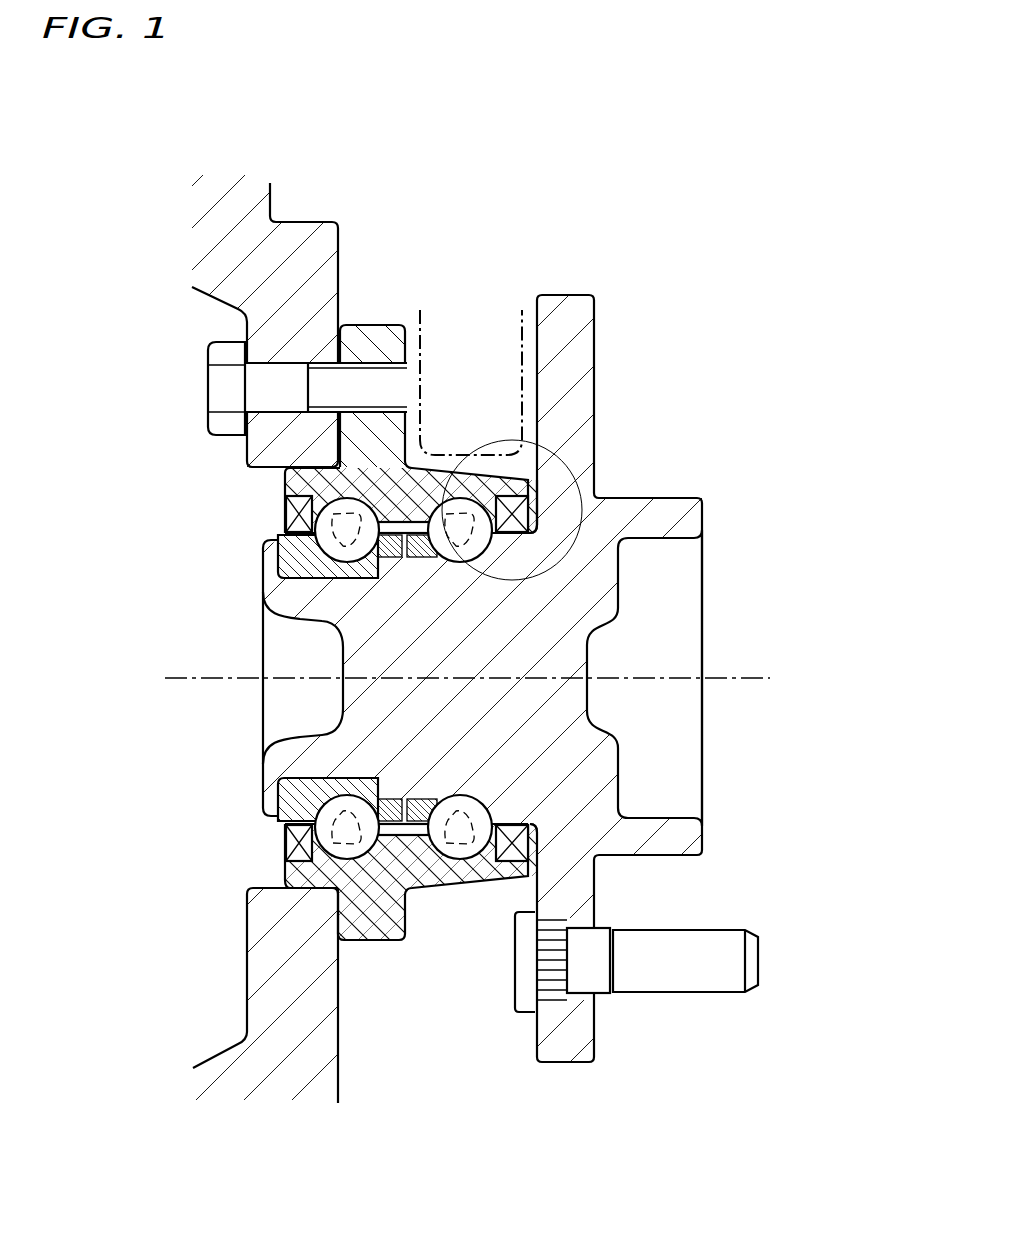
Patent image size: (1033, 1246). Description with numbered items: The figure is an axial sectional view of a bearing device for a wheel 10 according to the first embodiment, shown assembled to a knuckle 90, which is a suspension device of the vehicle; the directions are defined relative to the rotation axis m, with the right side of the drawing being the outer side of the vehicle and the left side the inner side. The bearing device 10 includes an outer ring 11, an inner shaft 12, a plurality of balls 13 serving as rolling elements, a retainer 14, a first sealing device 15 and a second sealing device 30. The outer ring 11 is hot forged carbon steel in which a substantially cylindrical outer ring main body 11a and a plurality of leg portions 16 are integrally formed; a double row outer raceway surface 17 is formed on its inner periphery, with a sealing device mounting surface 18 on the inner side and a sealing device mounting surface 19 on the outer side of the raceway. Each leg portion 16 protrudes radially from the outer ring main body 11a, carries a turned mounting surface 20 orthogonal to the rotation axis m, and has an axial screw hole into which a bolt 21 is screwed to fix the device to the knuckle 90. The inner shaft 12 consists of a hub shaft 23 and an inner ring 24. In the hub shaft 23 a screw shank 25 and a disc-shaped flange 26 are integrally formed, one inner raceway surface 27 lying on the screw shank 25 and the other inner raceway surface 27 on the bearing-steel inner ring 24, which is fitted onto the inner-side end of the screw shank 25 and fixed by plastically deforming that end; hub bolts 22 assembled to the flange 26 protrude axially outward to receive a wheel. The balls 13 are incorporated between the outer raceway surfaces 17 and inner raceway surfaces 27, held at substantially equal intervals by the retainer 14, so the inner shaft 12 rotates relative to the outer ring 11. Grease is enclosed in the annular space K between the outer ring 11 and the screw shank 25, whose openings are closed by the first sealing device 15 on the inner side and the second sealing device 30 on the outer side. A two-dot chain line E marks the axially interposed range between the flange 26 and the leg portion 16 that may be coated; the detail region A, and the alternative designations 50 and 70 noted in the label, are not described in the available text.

The bearing device for a wheel 10 is at (449, 630).
The hub unit bearing (second embodiment) 50 is at (449, 630).
The hub unit bearing (third embodiment) 70 is at (449, 630).
The outer ring 11 is at (252, 491).
The outer ring main body 11a is at (393, 526).
The inner shaft 12 is at (235, 633).
The balls 13 is at (420, 880).
The retainer 14 is at (388, 565).
The first sealing device 15 is at (263, 522).
The leg portion 16 is at (357, 330).
The outer raceway surface 17 is at (410, 790).
The sealing device mounting surface 18 is at (285, 836).
The sealing device mounting surface 19 is at (617, 856).
The mounting surface 20 is at (335, 350).
The bolt 21 is at (212, 382).
The hub bolt 22 is at (640, 984).
The hub shaft 23 is at (685, 646).
The inner ring 24 is at (282, 797).
The screw shank 25 is at (562, 600).
The flange 26 is at (585, 328).
The inner raceway surface 27 is at (330, 857).
The second sealing device 30 is at (558, 488).
The knuckle 90 is at (289, 224).
The region A is at (600, 495).
The range indicated by a two-dot chain line E is at (460, 307).
The annular space K is at (452, 456).
The rotation axis m is at (740, 678).